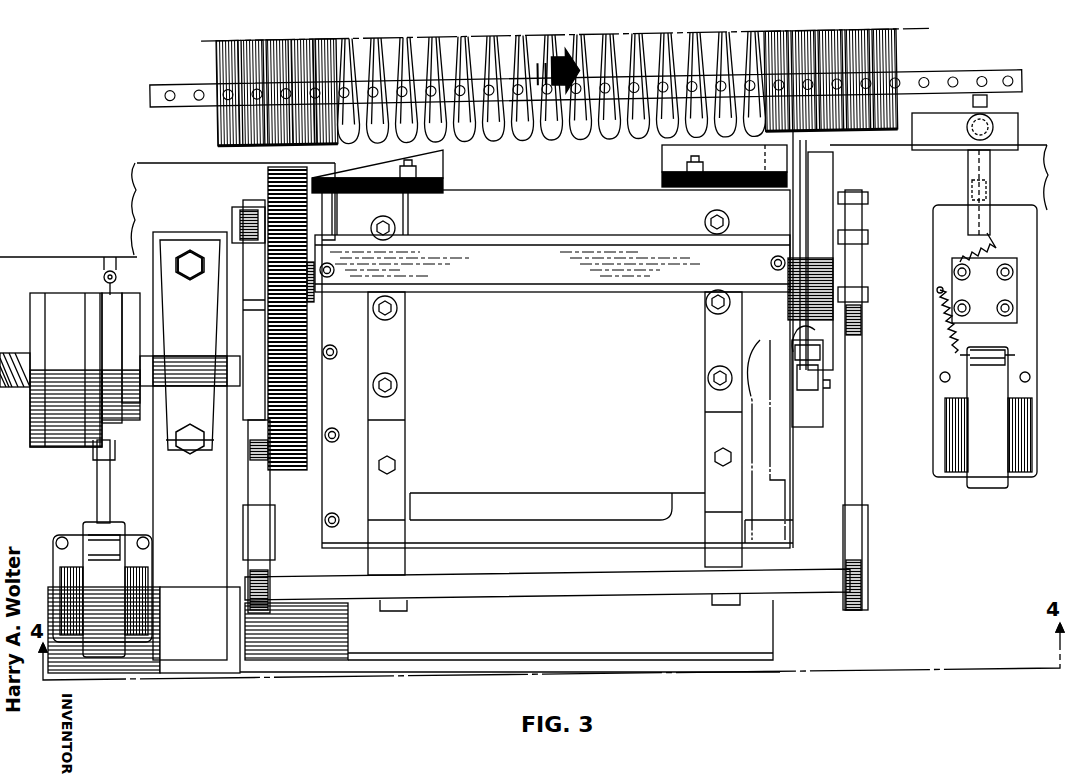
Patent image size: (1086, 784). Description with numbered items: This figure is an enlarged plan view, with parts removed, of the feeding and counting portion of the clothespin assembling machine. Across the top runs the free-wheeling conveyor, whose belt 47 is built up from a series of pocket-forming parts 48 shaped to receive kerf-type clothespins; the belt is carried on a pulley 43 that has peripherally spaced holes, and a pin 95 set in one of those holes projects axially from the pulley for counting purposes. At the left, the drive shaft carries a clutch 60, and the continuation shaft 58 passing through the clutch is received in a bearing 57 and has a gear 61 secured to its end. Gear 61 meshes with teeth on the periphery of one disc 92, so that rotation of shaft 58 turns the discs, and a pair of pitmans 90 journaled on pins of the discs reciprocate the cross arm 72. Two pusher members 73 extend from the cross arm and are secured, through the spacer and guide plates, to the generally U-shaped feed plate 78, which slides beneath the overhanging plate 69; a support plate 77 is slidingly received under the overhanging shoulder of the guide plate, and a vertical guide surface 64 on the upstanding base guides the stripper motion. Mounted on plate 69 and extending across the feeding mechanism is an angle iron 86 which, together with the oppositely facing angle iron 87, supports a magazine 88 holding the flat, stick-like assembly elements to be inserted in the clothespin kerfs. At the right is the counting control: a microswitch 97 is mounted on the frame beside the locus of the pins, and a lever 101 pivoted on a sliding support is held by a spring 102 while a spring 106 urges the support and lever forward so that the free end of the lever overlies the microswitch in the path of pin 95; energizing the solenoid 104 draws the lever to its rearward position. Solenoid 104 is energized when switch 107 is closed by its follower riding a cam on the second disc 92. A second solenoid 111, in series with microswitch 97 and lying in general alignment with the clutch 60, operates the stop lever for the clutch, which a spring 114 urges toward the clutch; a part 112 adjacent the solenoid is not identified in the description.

The pulley 43 is at (932, 85).
The belt 47 is at (418, 38).
The pocket-forming parts 48 is at (318, 50).
The bearing 57 is at (190, 446).
The continuation shaft 58 is at (163, 368).
The clutch 60 is at (70, 312).
The gear 61 is at (300, 416).
The vertical guide surface 64 is at (22, 365).
The plate 69 is at (557, 522).
The cross arm 72 is at (585, 588).
The pusher members 73 is at (406, 482).
The support plate 77 is at (555, 474).
The feed plate 78 is at (557, 339).
The angle iron 86 is at (552, 263).
The angle iron 87 is at (395, 172).
The magazine 88 is at (504, 227).
The pitmans 90 is at (265, 484).
The disc 92 is at (298, 324).
The pin 95 is at (983, 95).
The microswitch 97 is at (967, 128).
The lever 101 is at (968, 177).
The spring 102 is at (956, 256).
The solenoid 104 is at (985, 346).
The spring 106 is at (940, 310).
The switch 107 is at (826, 400).
The second solenoid 111 is at (102, 589).
The rod 112 is at (97, 475).
The spring 114 is at (108, 293).